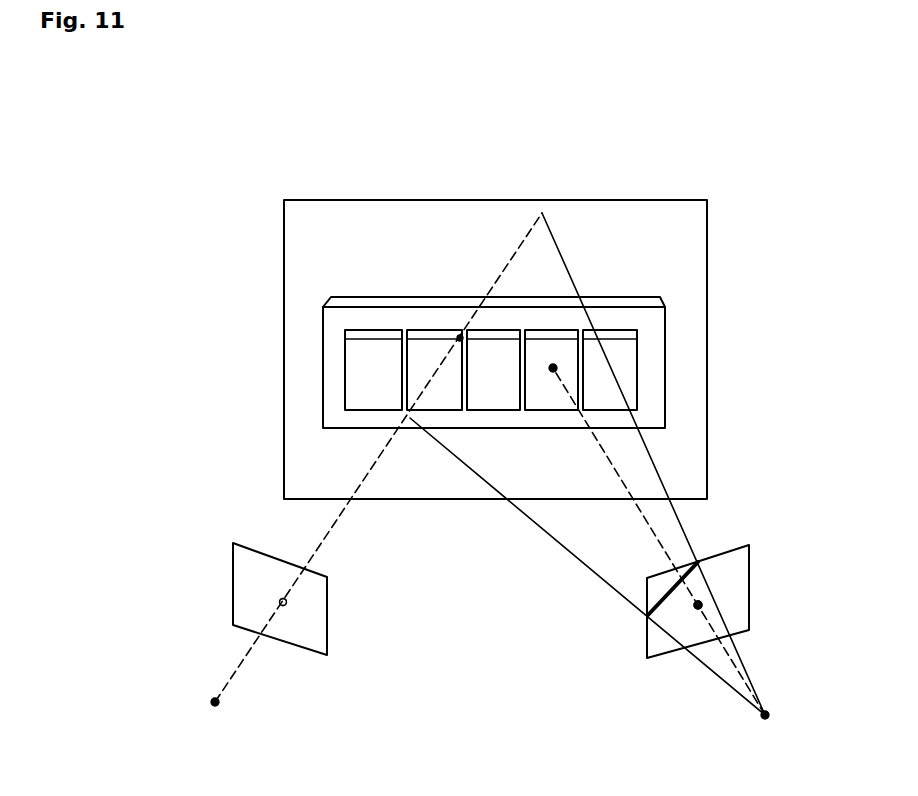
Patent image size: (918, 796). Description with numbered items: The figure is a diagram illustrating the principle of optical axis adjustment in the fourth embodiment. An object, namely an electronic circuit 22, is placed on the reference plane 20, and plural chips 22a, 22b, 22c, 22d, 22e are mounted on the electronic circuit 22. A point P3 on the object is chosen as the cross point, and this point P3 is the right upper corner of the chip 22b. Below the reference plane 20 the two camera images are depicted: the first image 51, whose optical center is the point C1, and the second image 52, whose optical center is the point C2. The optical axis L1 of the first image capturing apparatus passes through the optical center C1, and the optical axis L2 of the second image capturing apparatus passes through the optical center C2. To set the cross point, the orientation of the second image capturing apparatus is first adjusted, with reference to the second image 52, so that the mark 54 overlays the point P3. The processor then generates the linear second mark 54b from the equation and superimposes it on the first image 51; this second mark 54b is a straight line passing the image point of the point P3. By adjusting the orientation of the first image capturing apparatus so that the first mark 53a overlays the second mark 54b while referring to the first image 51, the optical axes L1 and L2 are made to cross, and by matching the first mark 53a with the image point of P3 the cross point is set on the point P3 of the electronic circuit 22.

The reference plane 20 is at (450, 200).
The electronic circuit 22 is at (325, 355).
The chip 22a is at (380, 345).
The chip 22b is at (433, 345).
The chip 22c is at (483, 408).
The chip 22d is at (543, 407).
The chip 22e is at (608, 343).
The point P3 is at (460, 338).
The optical axis L1 is at (641, 512).
The optical axis L2 is at (356, 490).
The first image 51 is at (652, 643).
The second image 52 is at (322, 635).
The first mark 53a is at (703, 600).
The mark 54 is at (287, 602).
The second mark 54b is at (646, 600).
The optical center C1 is at (715, 608).
The optical center C2 is at (271, 592).